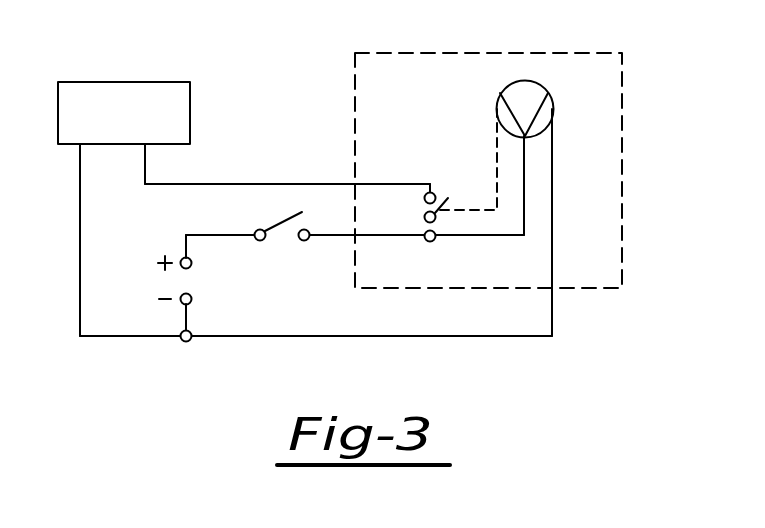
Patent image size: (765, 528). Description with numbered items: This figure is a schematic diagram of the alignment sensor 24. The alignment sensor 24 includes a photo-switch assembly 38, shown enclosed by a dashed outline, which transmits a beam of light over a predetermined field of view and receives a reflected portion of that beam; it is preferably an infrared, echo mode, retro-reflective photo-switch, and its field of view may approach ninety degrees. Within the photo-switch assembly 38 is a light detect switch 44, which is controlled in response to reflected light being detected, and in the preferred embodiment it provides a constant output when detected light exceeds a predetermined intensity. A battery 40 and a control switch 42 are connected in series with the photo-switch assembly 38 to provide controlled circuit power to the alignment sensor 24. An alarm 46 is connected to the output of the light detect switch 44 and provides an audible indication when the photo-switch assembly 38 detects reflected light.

The alignment sensor 24 is at (214, 80).
The photo-switch assembly 38 is at (624, 153).
The battery 40 is at (190, 286).
The control switch 42 is at (274, 226).
The light detect switch 44 is at (431, 192).
The alarm 46 is at (122, 82).